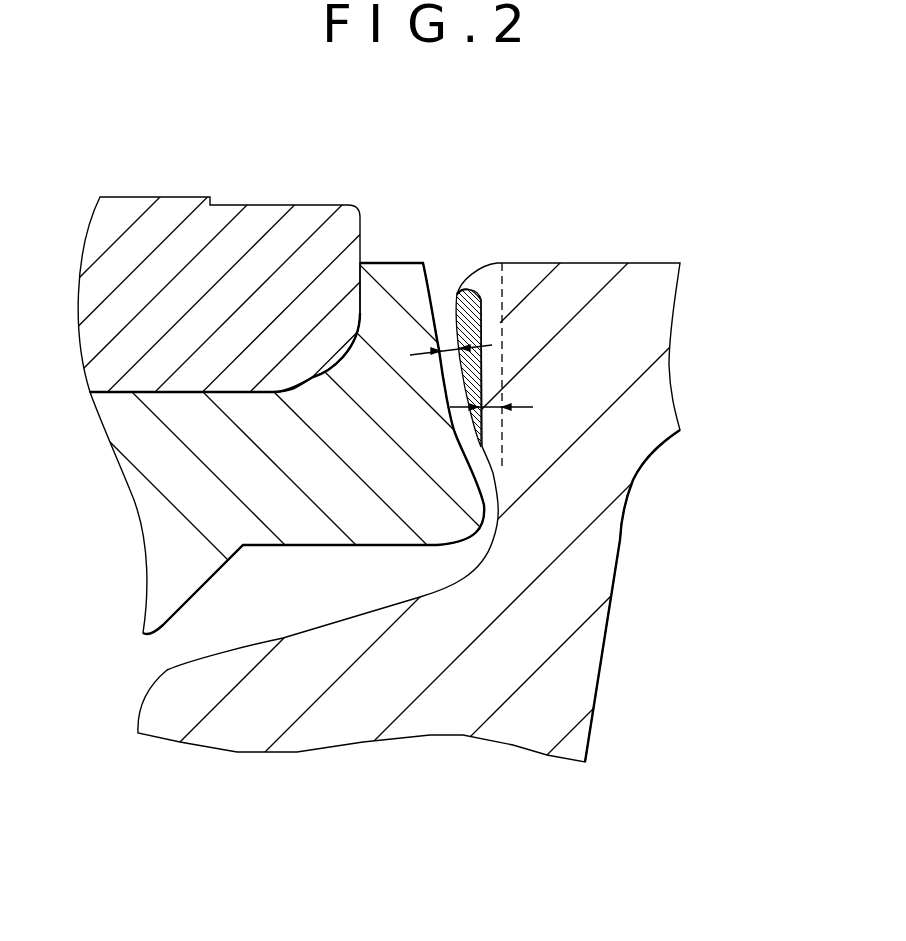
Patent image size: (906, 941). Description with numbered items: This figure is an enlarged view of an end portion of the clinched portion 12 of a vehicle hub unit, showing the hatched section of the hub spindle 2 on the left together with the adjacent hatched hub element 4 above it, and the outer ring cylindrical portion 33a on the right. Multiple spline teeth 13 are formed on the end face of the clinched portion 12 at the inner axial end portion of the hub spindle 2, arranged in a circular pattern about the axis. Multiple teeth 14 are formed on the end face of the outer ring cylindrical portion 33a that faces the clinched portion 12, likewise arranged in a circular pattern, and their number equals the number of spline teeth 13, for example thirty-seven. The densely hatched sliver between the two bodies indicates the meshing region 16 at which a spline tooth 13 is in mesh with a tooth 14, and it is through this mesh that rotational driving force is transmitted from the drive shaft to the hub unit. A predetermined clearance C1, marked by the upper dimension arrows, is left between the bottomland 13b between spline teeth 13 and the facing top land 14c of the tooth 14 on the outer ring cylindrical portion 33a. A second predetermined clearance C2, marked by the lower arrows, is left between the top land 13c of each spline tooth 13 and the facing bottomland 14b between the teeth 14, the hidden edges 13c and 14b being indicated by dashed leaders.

The hub spindle 2 is at (190, 476).
The piston ring 4 is at (182, 234).
The clinched portion 12 is at (387, 277).
The spline teeth 13 is at (442, 287).
The bottomland 13b is at (452, 390).
The top land 13c is at (492, 413).
The teeth 14 is at (492, 292).
The bottomland 14b is at (493, 440).
The top land 14c is at (628, 263).
The meshing region 16 is at (478, 306).
The outer ring cylindrical portion 33a is at (643, 333).
The clearance C1 is at (441, 332).
The clearance C2 is at (490, 395).